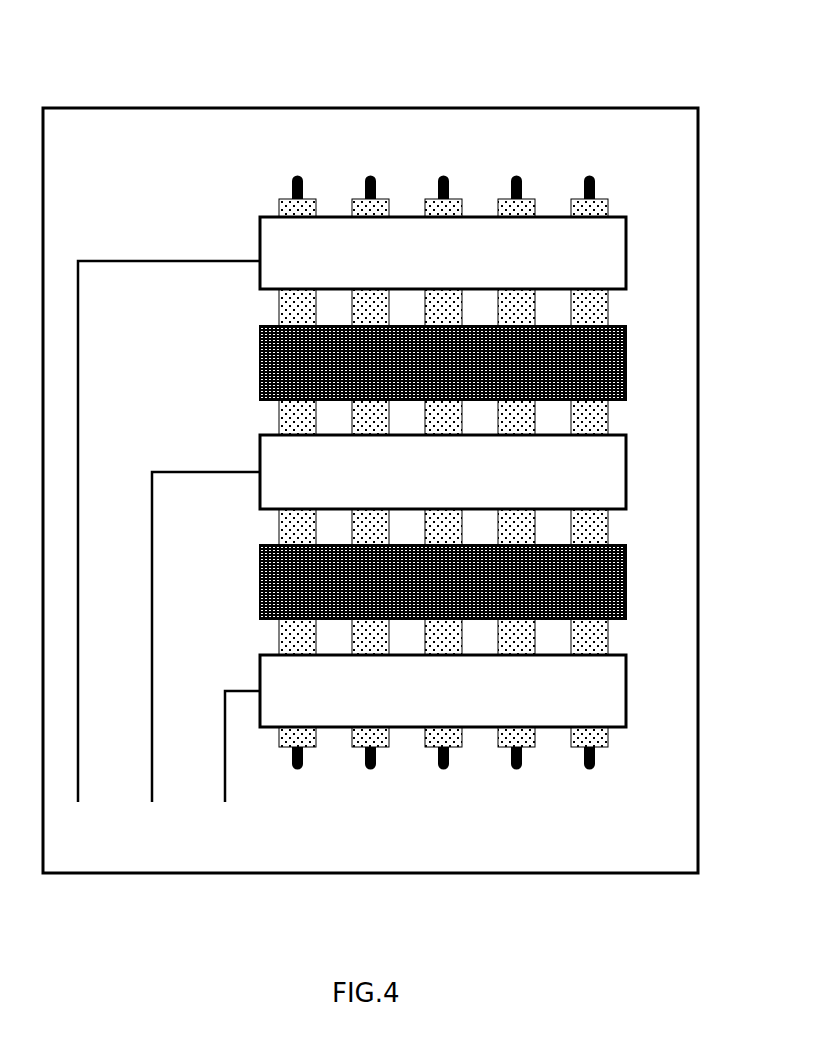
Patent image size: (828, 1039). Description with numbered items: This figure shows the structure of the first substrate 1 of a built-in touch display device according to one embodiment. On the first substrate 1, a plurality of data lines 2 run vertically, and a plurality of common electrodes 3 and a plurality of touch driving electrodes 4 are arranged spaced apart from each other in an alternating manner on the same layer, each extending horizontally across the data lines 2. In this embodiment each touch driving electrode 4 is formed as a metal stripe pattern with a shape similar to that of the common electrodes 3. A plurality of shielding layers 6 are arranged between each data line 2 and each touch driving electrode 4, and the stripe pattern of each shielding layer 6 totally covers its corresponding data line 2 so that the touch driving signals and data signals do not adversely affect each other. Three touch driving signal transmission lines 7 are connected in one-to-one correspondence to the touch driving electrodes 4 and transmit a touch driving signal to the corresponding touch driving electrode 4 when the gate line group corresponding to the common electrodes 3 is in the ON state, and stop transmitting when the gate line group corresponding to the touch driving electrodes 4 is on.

The first substrate 1 is at (479, 108).
The data line 2 is at (443, 177).
The common electrode 3 is at (627, 340).
The touch driving electrode 4 is at (627, 230).
The shielding layer 6 is at (528, 198).
The touch driving signal transmission line 7 is at (122, 261).